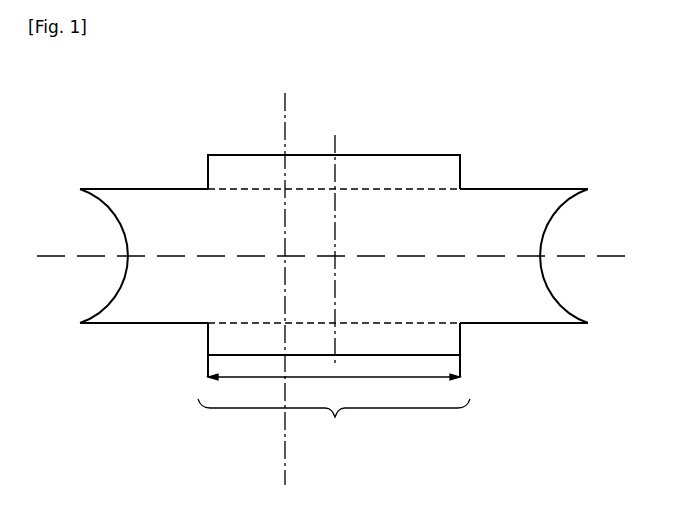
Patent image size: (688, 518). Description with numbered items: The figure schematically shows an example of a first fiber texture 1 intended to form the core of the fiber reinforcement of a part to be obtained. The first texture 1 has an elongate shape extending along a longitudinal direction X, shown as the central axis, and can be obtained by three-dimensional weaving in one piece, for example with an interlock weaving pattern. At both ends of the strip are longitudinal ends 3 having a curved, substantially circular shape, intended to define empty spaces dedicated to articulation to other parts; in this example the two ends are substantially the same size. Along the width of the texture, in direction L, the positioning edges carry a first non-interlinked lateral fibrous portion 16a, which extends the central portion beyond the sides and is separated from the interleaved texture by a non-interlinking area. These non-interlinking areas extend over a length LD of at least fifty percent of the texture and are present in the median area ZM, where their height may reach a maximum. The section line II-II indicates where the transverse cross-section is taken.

The first fiber texture 1 is at (576, 131).
The longitudinal ends 3 is at (113, 222).
The first non-interlinked lateral fibrous portion 16a is at (461, 170).
The length of non-interlinking areas LD is at (334, 384).
The median area ZM is at (334, 420).
The longitudinal direction X is at (608, 258).
The width direction L is at (337, 149).
The section line II-II is at (287, 103).